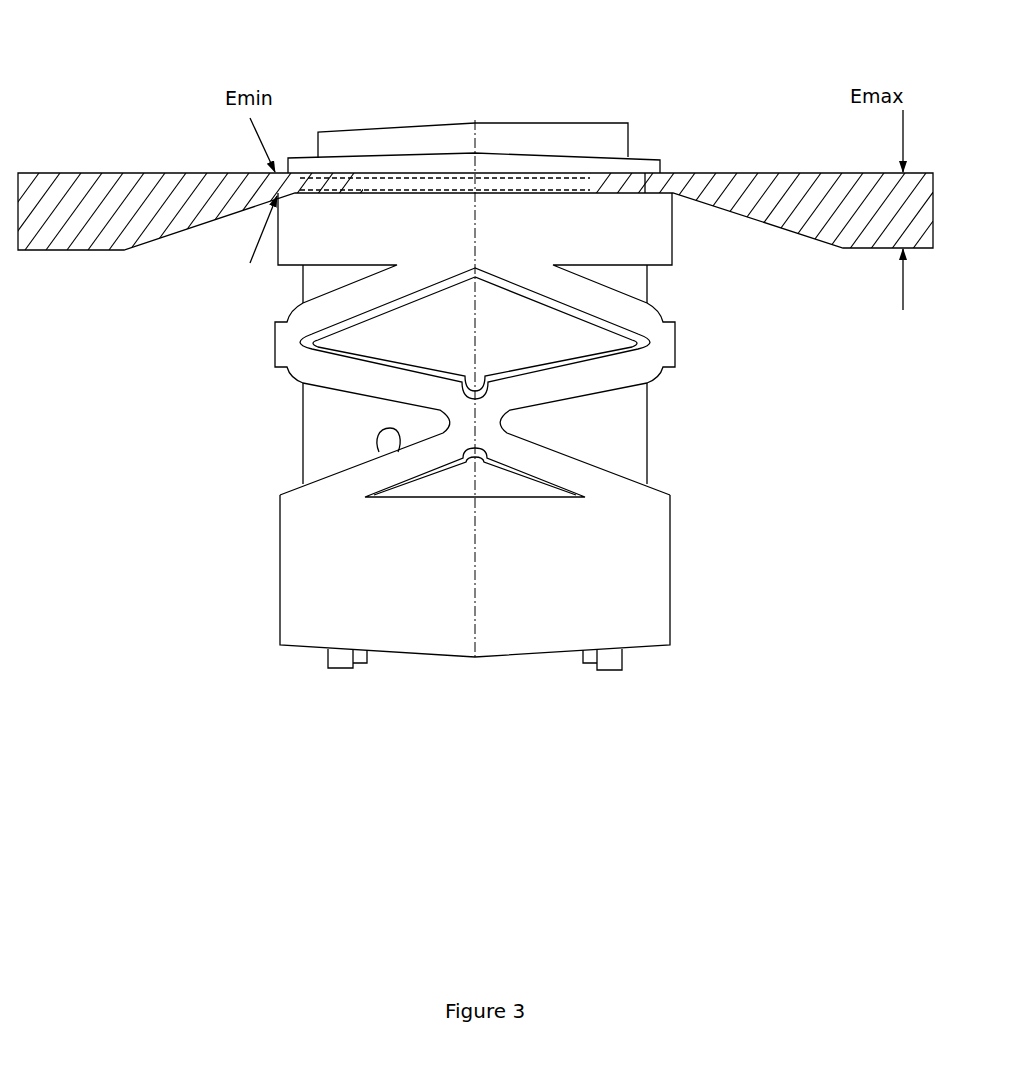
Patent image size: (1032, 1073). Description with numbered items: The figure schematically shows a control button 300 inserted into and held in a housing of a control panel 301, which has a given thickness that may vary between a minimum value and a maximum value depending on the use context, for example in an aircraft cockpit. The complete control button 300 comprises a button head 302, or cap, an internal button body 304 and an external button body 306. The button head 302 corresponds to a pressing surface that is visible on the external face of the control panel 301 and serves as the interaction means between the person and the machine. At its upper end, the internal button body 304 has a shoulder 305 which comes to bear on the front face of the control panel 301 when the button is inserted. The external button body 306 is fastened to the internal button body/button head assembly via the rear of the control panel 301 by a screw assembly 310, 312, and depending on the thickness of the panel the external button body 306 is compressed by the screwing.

The control button 300 is at (469, 35).
The control panel 301 is at (165, 172).
The button head 302 is at (332, 120).
The internal button body 304 is at (633, 438).
The shoulder 305 is at (658, 157).
The external button body 306 is at (267, 343).
The screw assembly 310 is at (623, 675).
The screw assembly 312 is at (325, 667).